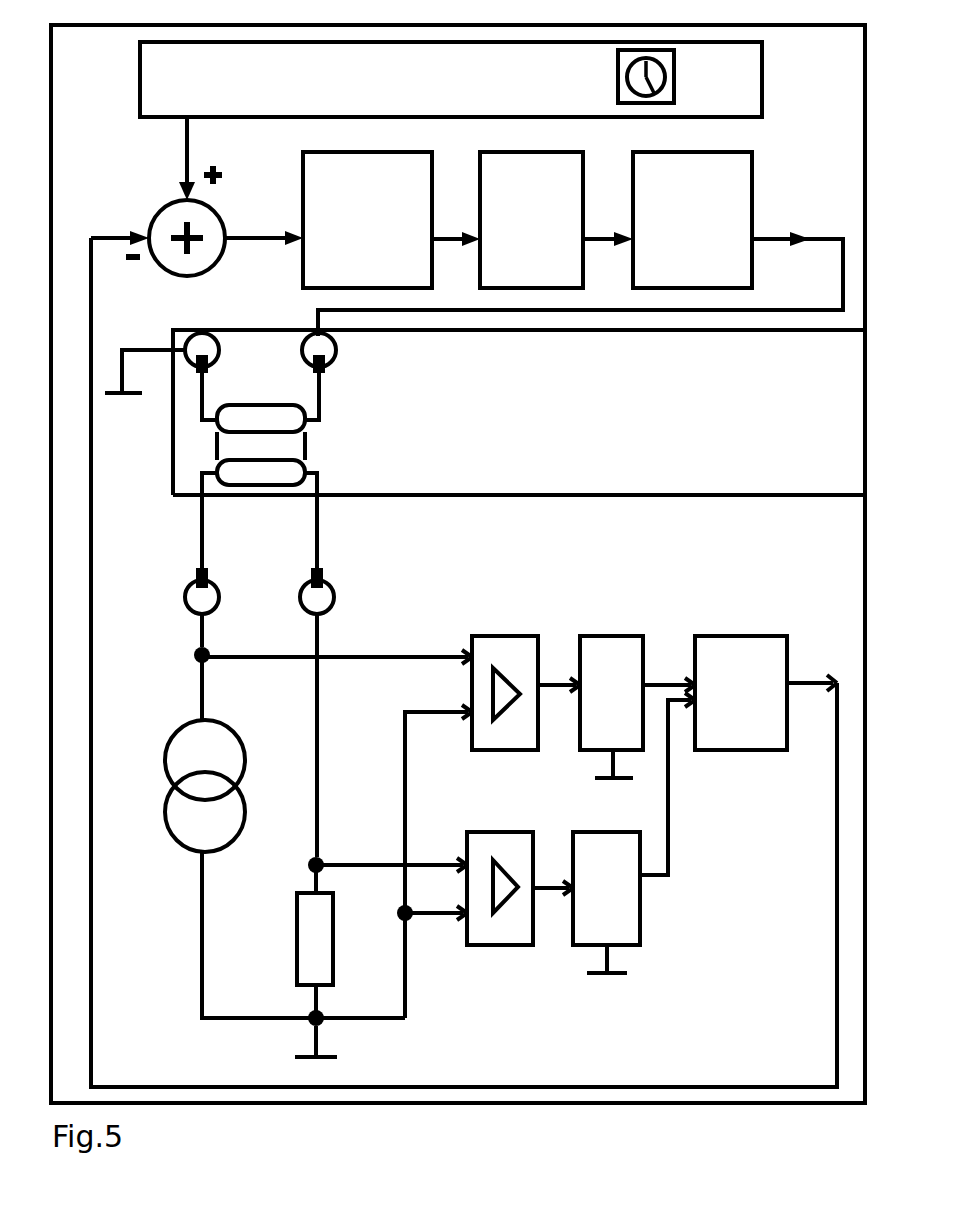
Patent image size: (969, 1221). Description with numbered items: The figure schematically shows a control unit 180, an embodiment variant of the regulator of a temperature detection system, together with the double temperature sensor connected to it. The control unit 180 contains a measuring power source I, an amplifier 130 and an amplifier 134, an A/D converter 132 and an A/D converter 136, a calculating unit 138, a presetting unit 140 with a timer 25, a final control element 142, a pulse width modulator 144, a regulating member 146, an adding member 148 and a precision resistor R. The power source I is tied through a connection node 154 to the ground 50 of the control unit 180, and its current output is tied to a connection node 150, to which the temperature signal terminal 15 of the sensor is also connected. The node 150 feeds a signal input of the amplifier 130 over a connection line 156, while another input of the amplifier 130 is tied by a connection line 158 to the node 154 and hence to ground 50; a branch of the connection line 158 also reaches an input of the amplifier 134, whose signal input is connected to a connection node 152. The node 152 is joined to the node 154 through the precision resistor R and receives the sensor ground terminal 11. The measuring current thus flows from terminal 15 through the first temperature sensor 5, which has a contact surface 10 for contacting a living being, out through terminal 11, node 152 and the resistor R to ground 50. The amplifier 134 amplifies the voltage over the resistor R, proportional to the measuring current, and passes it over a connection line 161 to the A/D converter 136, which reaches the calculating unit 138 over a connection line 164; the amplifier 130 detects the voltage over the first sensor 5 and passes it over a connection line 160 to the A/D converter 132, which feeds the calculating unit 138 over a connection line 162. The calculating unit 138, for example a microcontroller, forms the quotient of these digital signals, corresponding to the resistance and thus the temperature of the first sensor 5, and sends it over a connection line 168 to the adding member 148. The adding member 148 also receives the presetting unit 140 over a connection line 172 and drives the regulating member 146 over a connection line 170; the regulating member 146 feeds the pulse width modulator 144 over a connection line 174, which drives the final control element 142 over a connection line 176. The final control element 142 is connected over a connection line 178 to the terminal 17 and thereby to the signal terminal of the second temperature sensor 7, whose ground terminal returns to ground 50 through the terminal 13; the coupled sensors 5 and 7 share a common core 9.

The first temperature sensor 5 is at (293, 475).
The second temperature sensor 7 is at (290, 420).
The transformer core 9 is at (228, 447).
The contact surface 10 is at (266, 487).
The ground terminal 11 is at (334, 597).
The terminal 13 is at (200, 330).
The temperature signal terminal 15 is at (185, 597).
The terminal 17 is at (337, 355).
The timer 25 is at (618, 62).
The ground terminal 50 is at (128, 385).
The amplifier 130 is at (492, 636).
The A/D converter 132 is at (605, 636).
The amplifier 134 is at (490, 935).
The A/D converter 136 is at (627, 915).
The calculating unit 138 is at (755, 636).
The presetting unit 140 is at (762, 105).
The final control element 142 is at (752, 188).
The pulse width modulator 144 is at (583, 180).
The regulating member 146 is at (432, 165).
The adding member 148 is at (222, 210).
The connection node 150 is at (194, 655).
The connection node 152 is at (322, 858).
The connection node 154 is at (324, 1022).
The connection line 156 is at (372, 655).
The connection line 158 is at (410, 805).
The connection line 160 is at (555, 690).
The connection line 161 is at (553, 893).
The connection line 162 is at (672, 668).
The connection line 164 is at (670, 832).
The connection line 168 is at (835, 795).
The connection line 170 is at (258, 250).
The connection line 172 is at (182, 145).
The connection line 174 is at (448, 238).
The connection line 176 is at (600, 238).
The connection line 178 is at (690, 312).
The control unit 180 is at (500, 495).